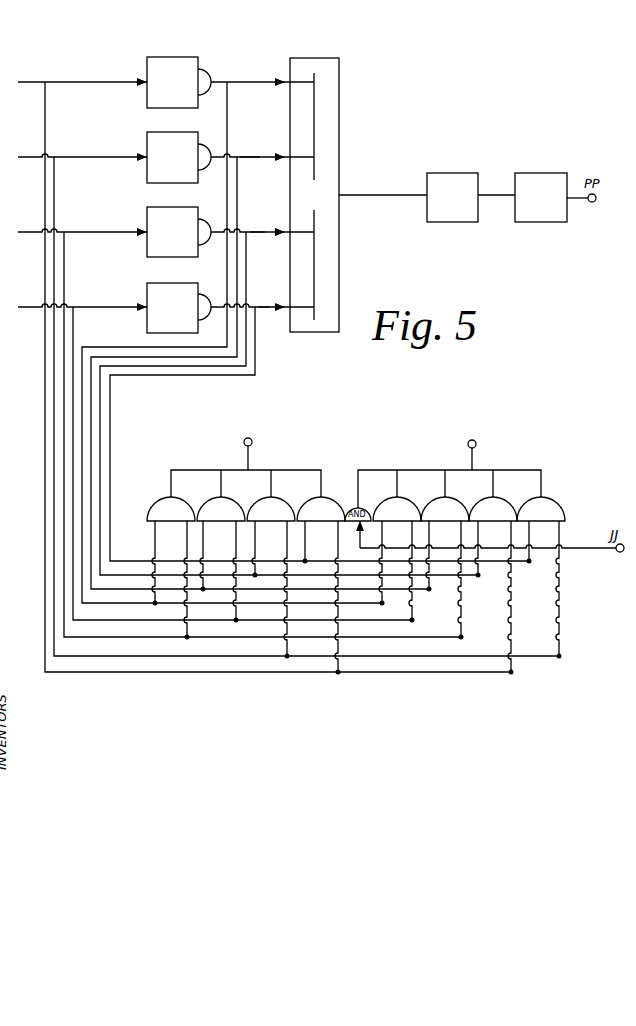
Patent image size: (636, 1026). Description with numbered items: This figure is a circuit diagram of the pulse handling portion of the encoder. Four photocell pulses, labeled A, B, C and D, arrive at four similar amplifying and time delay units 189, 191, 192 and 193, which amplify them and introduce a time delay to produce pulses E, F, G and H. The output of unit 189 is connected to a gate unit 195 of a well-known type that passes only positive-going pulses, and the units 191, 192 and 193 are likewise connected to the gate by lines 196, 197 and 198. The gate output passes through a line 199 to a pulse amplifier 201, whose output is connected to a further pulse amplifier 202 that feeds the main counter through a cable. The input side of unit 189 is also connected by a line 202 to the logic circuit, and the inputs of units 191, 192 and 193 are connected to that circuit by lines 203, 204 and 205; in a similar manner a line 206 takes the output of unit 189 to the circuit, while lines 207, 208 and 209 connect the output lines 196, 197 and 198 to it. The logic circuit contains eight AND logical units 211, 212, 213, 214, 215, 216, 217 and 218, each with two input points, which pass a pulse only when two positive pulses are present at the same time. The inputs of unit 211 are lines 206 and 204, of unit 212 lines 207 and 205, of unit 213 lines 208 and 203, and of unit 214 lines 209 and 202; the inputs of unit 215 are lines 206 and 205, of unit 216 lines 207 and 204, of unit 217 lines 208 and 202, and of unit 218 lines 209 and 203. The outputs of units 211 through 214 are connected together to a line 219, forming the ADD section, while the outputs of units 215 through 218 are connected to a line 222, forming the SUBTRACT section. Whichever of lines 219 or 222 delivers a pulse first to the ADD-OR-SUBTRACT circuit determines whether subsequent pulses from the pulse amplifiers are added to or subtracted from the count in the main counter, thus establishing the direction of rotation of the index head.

The amplifying and time delay unit 189 is at (178, 68).
The amplifying and time delay unit 191 is at (172, 141).
The amplifying and time delay unit 192 is at (170, 216).
The amplifying and time delay unit 193 is at (172, 293).
The gate unit 195 is at (327, 64).
The line 196 is at (264, 156).
The line 197 is at (267, 231).
The line 198 is at (262, 314).
The line 199 is at (380, 194).
The pulse amplifier 201 is at (454, 173).
The pulse amplifier / line 202 is at (45, 105).
The line 203 is at (54, 185).
The line 204 is at (64, 257).
The line 205 is at (73, 330).
The line 206 is at (227, 105).
The line 207 is at (237, 183).
The line 208 is at (246, 258).
The line 209 is at (255, 370).
The AND logical unit 211 is at (157, 500).
The AND logical unit 212 is at (205, 500).
The AND logical unit 213 is at (255, 500).
The AND logical unit 214 is at (307, 500).
The AND logical unit 215 is at (385, 502).
The AND logical unit 216 is at (431, 502).
The AND logical unit 217 is at (479, 502).
The AND logical unit 218 is at (526, 502).
The line 219 is at (252, 453).
The line 222 is at (474, 456).